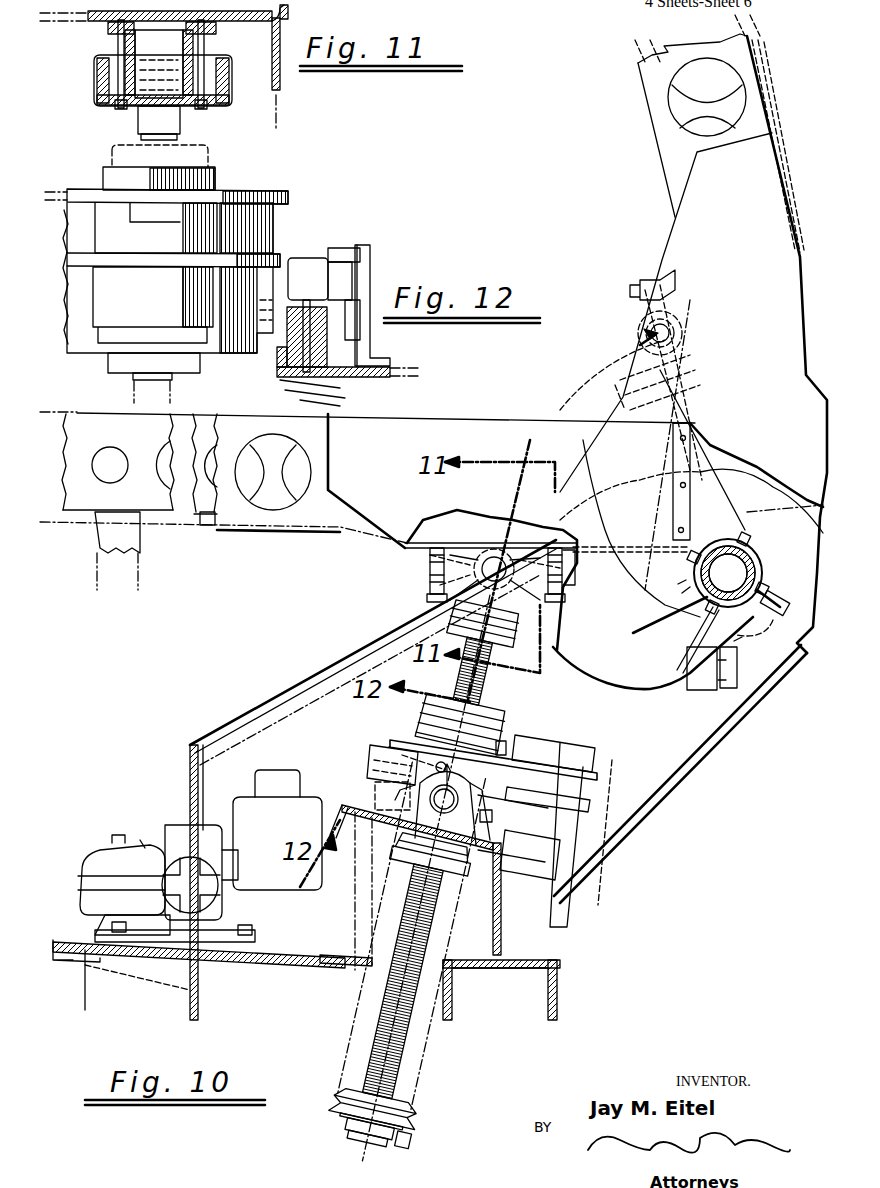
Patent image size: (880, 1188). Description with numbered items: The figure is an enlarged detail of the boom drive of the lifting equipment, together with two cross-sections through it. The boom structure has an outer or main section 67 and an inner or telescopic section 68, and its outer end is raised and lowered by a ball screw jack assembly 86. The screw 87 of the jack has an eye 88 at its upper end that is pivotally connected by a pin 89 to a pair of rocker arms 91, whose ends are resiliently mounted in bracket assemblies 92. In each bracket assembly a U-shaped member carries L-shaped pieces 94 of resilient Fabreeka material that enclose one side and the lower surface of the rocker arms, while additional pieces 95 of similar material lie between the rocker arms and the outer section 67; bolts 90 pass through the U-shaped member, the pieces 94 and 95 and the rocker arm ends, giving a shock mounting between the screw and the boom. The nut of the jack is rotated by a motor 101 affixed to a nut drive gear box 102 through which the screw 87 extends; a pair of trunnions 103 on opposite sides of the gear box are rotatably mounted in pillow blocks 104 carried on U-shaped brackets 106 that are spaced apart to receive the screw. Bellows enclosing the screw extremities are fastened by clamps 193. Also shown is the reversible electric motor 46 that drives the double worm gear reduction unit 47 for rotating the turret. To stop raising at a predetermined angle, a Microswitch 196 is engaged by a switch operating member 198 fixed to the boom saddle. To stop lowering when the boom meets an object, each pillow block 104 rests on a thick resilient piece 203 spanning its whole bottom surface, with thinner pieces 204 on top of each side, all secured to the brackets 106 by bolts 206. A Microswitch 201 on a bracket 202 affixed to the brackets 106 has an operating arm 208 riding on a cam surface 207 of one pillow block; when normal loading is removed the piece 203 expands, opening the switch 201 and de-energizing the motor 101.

In FIG. 10, the reversible electric motor 46 is at (305, 800).
In FIG. 10, the double worm gear reduction unit 47 is at (110, 855).
In FIG. 10, the outer or main section 67 is at (665, 170).
In FIG. 10, the inner or telescopic section 68 is at (207, 525).
In FIG. 10, the ball screw jack assembly 86 is at (480, 548).
In FIG. 10, the screw 87 is at (488, 686).
In FIG. 10, the eye 88 is at (432, 570).
In FIG. 10, the pin 89 is at (508, 582).
In FIG. 11, the bolts 90 is at (128, 108).
In FIG. 11, the rocker arms 91 is at (100, 78).
In FIG. 10, the rocker arms 91 is at (440, 578).
In FIG. 11, the bracket assemblies 92 is at (96, 105).
In FIG. 10, the bracket assemblies 92 is at (570, 582).
In FIG. 11, the L-shaped pieces 94 is at (210, 110).
In FIG. 11, the additional pieces of resilient material 95 is at (116, 40).
In FIG. 10, the motor 101 is at (560, 900).
In FIG. 12, the nut drive gear box 102 is at (258, 190).
In FIG. 12, the trunnions 103 is at (365, 275).
In FIG. 12, the pillow blocks 104 is at (340, 262).
In FIG. 12, the U-shaped brackets 106 is at (278, 372).
In FIG. 10, the U-shaped brackets 106 is at (505, 918).
In FIG. 10, the clamps 193 is at (508, 745).
In FIG. 10, the Microswitch 196 is at (702, 690).
In FIG. 10, the switch operating member 198 is at (772, 622).
In FIG. 10, the Microswitch 201 is at (368, 756).
In FIG. 12, the bracket 202 is at (366, 348).
In FIG. 12, the piece of resilient material 203 is at (330, 380).
In FIG. 12, the additional piece of resilient material 204 is at (298, 302).
In FIG. 12, the bolts 206 is at (350, 302).
In FIG. 10, the cam surface 207 is at (472, 785).
In FIG. 10, the operating arm 208 is at (412, 750).